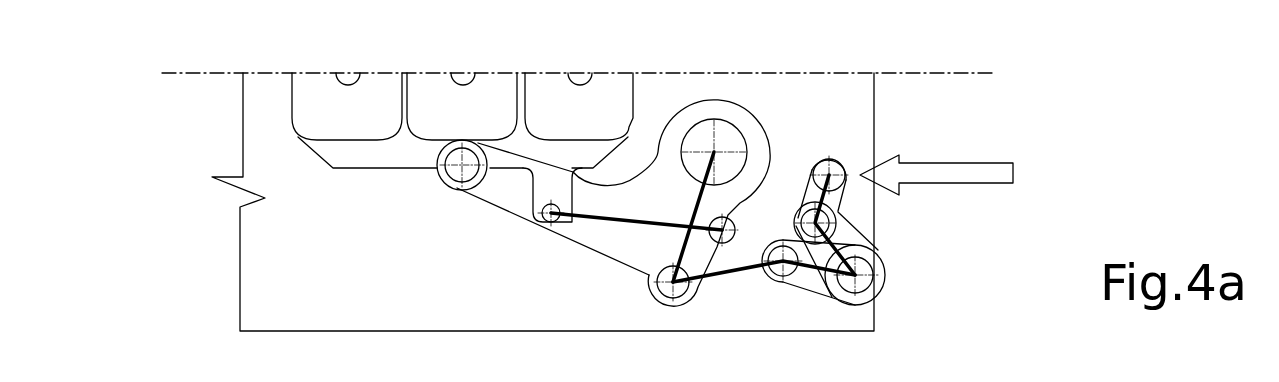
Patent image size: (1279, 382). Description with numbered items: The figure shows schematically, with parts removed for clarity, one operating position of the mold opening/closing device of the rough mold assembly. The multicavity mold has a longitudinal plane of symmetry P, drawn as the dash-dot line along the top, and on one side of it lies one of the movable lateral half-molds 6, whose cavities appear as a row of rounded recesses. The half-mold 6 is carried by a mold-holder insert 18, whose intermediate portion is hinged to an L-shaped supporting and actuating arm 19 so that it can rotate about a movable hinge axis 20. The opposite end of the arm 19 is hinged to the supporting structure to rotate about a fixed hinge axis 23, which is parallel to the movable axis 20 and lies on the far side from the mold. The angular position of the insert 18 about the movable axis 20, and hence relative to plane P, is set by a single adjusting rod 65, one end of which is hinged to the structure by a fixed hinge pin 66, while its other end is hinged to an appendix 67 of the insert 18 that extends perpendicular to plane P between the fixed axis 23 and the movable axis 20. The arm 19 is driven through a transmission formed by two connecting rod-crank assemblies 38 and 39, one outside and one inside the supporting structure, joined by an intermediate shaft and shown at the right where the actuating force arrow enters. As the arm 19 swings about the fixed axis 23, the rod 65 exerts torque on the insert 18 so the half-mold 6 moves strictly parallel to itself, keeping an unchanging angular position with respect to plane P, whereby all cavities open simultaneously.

The plane of symmetry P is at (195, 66).
The lateral half-mold 6 is at (305, 103).
The mold-holder insert 18 is at (363, 152).
The movable hinge axis 20 is at (440, 178).
The appendix 67 is at (540, 192).
The supporting and actuating arm 19 is at (572, 226).
The fixed hinge axis 23 is at (714, 152).
The adjusting rod 65 is at (635, 220).
The fixed hinge pin 66 is at (722, 245).
The connecting rod-crank assembly 38 is at (760, 294).
The connecting rod-crank assembly 39 is at (890, 218).